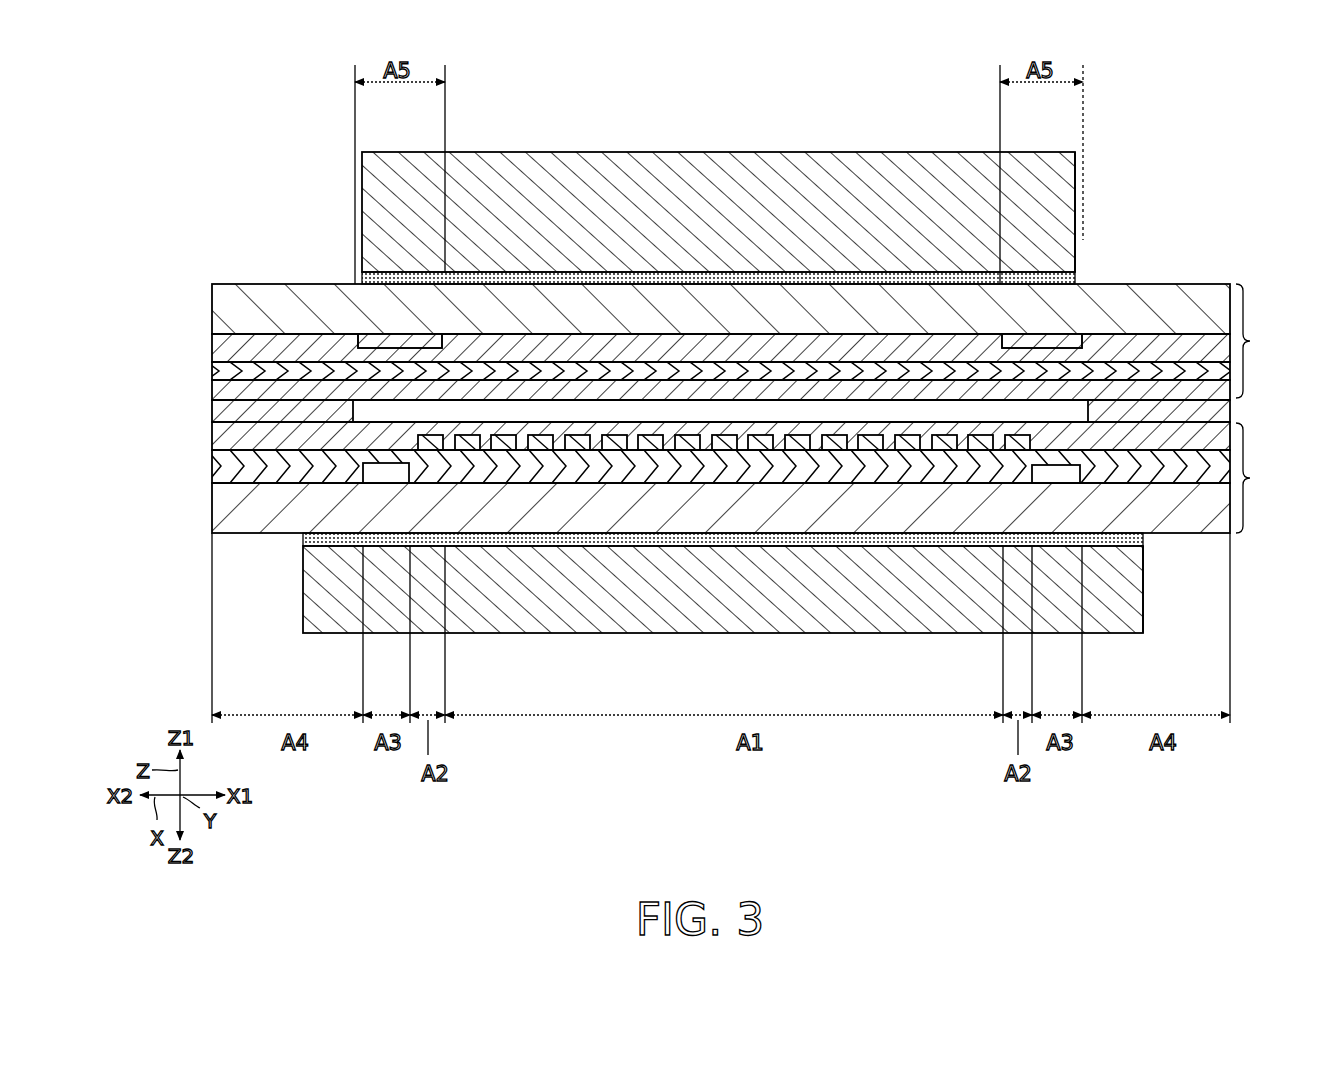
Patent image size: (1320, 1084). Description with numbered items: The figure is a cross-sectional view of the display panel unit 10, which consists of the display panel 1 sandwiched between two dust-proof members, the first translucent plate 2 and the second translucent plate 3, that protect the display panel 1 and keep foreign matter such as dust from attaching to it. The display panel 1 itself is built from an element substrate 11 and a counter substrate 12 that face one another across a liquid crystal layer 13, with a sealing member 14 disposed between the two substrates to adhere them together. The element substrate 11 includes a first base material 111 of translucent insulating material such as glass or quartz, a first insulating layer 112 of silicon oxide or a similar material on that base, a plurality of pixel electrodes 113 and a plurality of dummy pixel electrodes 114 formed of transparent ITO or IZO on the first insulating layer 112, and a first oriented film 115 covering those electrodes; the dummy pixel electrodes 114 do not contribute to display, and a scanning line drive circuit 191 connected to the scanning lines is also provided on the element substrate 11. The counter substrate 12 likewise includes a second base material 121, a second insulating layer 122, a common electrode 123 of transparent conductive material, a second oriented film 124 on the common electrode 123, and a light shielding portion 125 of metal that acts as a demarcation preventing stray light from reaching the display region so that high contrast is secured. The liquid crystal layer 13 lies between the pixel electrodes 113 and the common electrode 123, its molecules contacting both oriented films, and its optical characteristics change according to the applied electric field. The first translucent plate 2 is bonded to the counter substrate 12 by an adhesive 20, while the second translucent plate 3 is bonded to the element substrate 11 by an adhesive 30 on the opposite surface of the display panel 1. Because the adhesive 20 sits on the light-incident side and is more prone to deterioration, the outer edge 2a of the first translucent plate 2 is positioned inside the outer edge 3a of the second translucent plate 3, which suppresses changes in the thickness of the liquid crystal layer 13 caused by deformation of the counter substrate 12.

The display panel 1 is at (1184, 283).
The first translucent plate 2 is at (800, 180).
The outer edge of the first translucent plate 2a is at (1077, 262).
The second translucent plate 3 is at (788, 600).
The outer edge of the second translucent plate 3a is at (1144, 588).
The display panel unit 10 is at (1210, 178).
The element substrate 11 is at (1259, 478).
The counter substrate 12 is at (1259, 341).
The liquid crystal layer 13 is at (887, 415).
The sealing member 14 is at (1214, 413).
The adhesive 20 is at (362, 282).
The adhesive 30 is at (312, 543).
The first base material 111 is at (600, 500).
The first insulating layer 112 is at (538, 466).
The pixel electrodes 113 is at (732, 446).
The dummy pixel electrodes 114 is at (438, 444).
The first oriented film 115 is at (667, 428).
The second base material 121 is at (496, 348).
The second insulating layer 122 is at (547, 372).
The common electrode 123 is at (613, 390).
The second oriented film 124 is at (690, 393).
The light shielding portion 125 is at (402, 345).
The scanning line drive circuit 191 is at (382, 470).